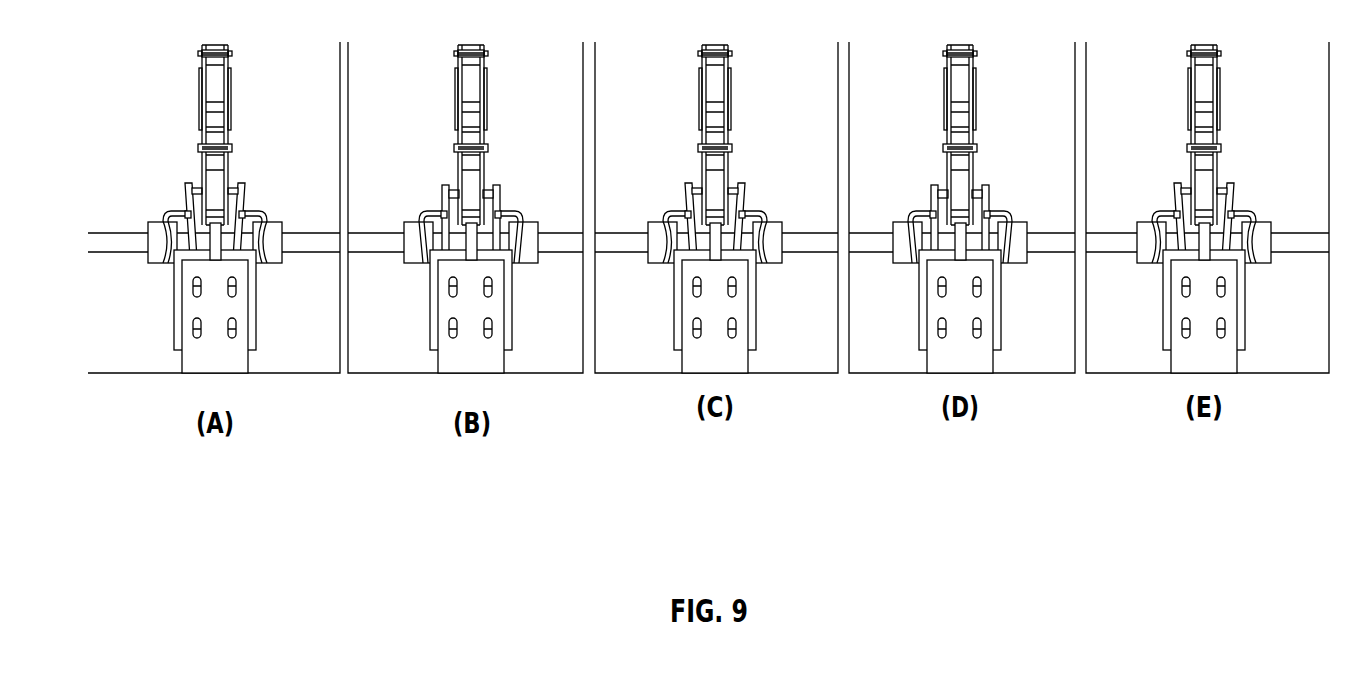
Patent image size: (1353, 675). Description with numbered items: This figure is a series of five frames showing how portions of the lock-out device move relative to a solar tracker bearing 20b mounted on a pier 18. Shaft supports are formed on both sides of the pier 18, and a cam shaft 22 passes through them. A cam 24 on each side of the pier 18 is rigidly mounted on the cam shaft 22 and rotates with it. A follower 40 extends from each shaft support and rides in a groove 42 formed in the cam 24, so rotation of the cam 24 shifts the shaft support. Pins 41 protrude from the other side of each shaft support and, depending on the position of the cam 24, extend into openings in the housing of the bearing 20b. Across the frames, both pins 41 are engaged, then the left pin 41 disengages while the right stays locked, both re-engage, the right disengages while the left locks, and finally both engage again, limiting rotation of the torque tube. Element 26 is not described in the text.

The pier 18 is at (735, 364).
The bearing 20b is at (722, 48).
The cam shaft 22 is at (601, 255).
The cam 24 is at (655, 240).
The swing arm 26 is at (687, 190).
The follower 40 is at (664, 212).
The pin 41 is at (698, 185).
The groove 42 is at (666, 266).